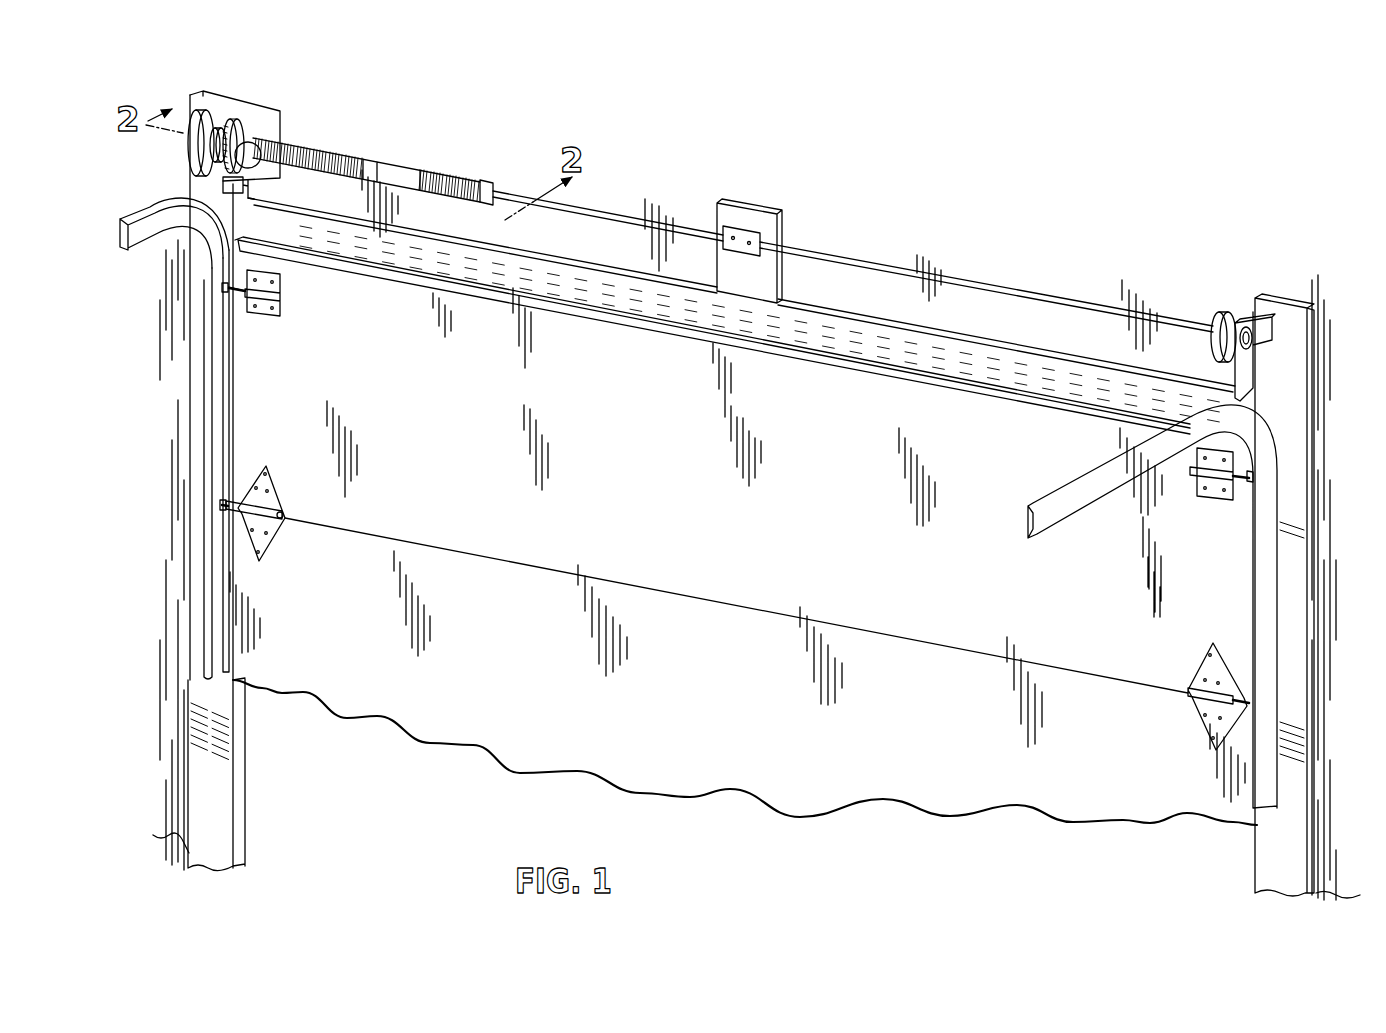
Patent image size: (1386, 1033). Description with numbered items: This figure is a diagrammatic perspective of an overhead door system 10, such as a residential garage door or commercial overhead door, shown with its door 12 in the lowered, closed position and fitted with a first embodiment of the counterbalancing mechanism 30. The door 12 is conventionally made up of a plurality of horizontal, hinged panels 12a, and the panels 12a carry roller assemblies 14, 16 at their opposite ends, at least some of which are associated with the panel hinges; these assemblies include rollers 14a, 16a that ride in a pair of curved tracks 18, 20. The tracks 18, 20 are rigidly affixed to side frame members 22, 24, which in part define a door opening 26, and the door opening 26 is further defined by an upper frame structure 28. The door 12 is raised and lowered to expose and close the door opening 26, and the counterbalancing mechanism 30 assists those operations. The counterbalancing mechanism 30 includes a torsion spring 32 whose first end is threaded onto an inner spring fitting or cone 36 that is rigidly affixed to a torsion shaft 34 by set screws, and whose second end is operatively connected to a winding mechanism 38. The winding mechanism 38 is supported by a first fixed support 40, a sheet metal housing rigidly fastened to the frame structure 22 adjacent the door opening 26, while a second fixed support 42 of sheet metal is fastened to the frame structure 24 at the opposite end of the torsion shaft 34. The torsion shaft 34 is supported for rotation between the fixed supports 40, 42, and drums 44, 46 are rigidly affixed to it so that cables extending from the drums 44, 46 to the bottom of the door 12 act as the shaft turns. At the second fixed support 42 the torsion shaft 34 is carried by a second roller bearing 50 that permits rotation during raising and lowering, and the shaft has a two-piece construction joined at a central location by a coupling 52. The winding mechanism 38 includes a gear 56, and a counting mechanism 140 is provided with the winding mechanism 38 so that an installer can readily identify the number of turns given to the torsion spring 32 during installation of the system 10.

The overhead door system 10 is at (982, 190).
The door 12 is at (740, 349).
The horizontal hinged panels 12a is at (664, 496).
The roller assembly 14 is at (297, 298).
The roller 14a is at (224, 300).
The roller assembly 16 is at (1193, 493).
The roller 16a is at (1240, 700).
The curved track 18 is at (143, 248).
The curved track 20 is at (1108, 488).
The side frame member 22 is at (196, 424).
The side frame member 24 is at (1297, 467).
The door opening 26 is at (245, 829).
The upper frame structure 28 is at (852, 344).
The counterbalancing mechanism 30 is at (428, 150).
The torsion spring 32 is at (378, 160).
The torsion shaft 34 is at (622, 212).
The inner spring fitting or cone 36 is at (497, 181).
The winding mechanism 38 is at (260, 132).
The first fixed support 40 is at (262, 104).
The second fixed support 42 is at (1246, 384).
The drum 44 is at (200, 145).
The drum 46 is at (1225, 314).
The second roller bearing 50 is at (1262, 337).
The coupling 52 is at (748, 230).
The gear 56 is at (241, 123).
The counting mechanism 140 is at (262, 205).